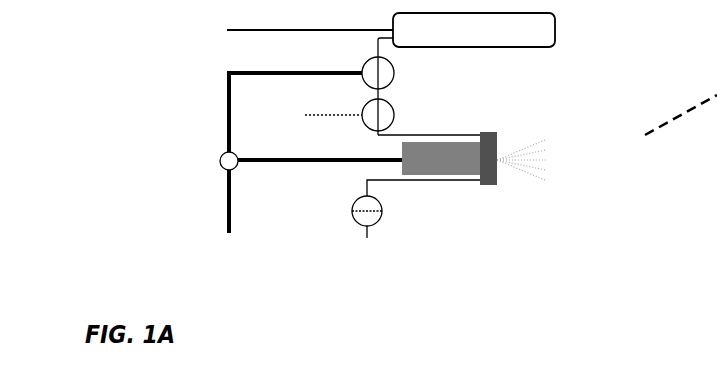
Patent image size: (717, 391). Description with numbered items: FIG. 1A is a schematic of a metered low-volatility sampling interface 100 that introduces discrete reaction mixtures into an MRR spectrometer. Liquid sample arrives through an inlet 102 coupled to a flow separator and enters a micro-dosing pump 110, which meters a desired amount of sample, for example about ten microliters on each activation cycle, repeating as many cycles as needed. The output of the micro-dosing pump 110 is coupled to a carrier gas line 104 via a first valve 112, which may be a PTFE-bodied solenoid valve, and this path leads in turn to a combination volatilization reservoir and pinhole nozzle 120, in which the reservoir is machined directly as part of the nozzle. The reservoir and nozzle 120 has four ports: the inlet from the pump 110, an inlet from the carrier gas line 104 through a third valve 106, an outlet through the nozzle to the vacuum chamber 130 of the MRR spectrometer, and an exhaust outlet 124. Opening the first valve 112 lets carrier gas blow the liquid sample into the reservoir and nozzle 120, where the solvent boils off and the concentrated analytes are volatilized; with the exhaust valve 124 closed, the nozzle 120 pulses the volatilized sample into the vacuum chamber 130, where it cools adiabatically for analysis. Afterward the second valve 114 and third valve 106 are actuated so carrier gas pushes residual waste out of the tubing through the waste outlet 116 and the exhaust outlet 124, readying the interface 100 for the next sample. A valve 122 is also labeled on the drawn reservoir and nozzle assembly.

The sampling interface 100 is at (150, 160).
The inlet 102 is at (264, 40).
The carrier gas line 104 is at (227, 220).
The third valve 106 is at (270, 123).
The micro-dosing pump 110 is at (499, 30).
The first valve 112 is at (400, 68).
The second valve 114 is at (360, 117).
The waste outlet 116 is at (321, 143).
The combination volatilization reservoir and pinhole nozzle 120 is at (496, 208).
The valve 122 is at (430, 180).
The exhaust outlet 124 is at (395, 224).
The vacuum chamber 130 is at (655, 216).